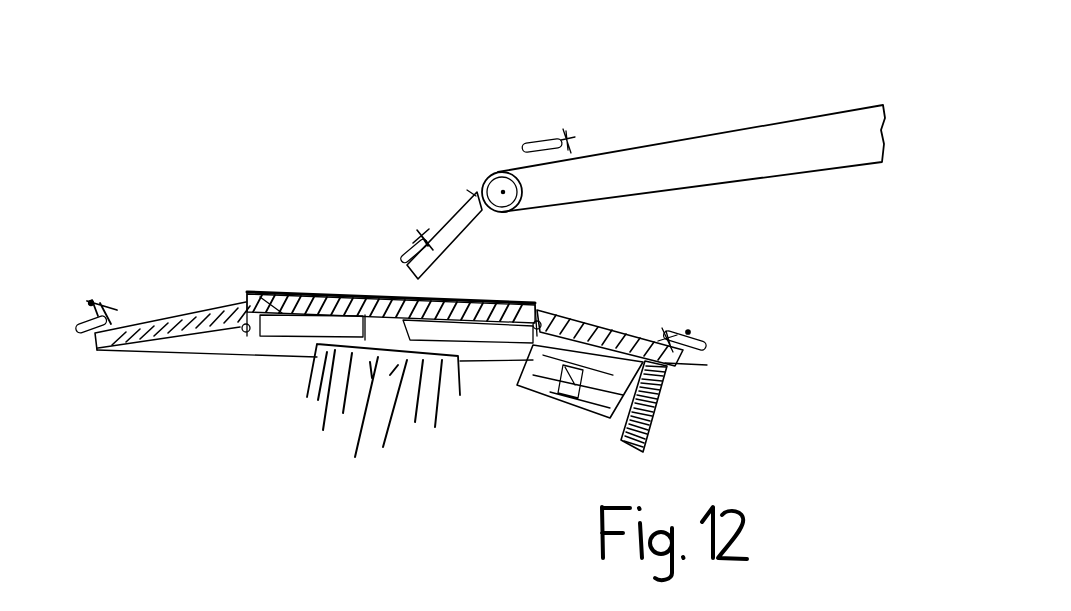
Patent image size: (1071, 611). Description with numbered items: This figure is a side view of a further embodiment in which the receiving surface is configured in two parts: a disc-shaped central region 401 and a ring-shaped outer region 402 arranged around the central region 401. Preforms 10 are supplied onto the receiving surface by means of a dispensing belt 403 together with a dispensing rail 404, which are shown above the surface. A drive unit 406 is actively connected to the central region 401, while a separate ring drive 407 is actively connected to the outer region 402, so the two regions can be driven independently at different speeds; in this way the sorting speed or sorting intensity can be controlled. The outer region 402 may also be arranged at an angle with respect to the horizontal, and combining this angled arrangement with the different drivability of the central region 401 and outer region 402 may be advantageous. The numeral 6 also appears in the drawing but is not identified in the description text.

The clamp 6 is at (688, 332).
The preform 10 is at (553, 137).
The central region 401 is at (320, 290).
The outer region 402 is at (175, 312).
The dispensing belt 403 is at (735, 127).
The dispensing rail 404 is at (450, 223).
The drive unit 406 is at (317, 422).
The ring drive 407 is at (580, 403).